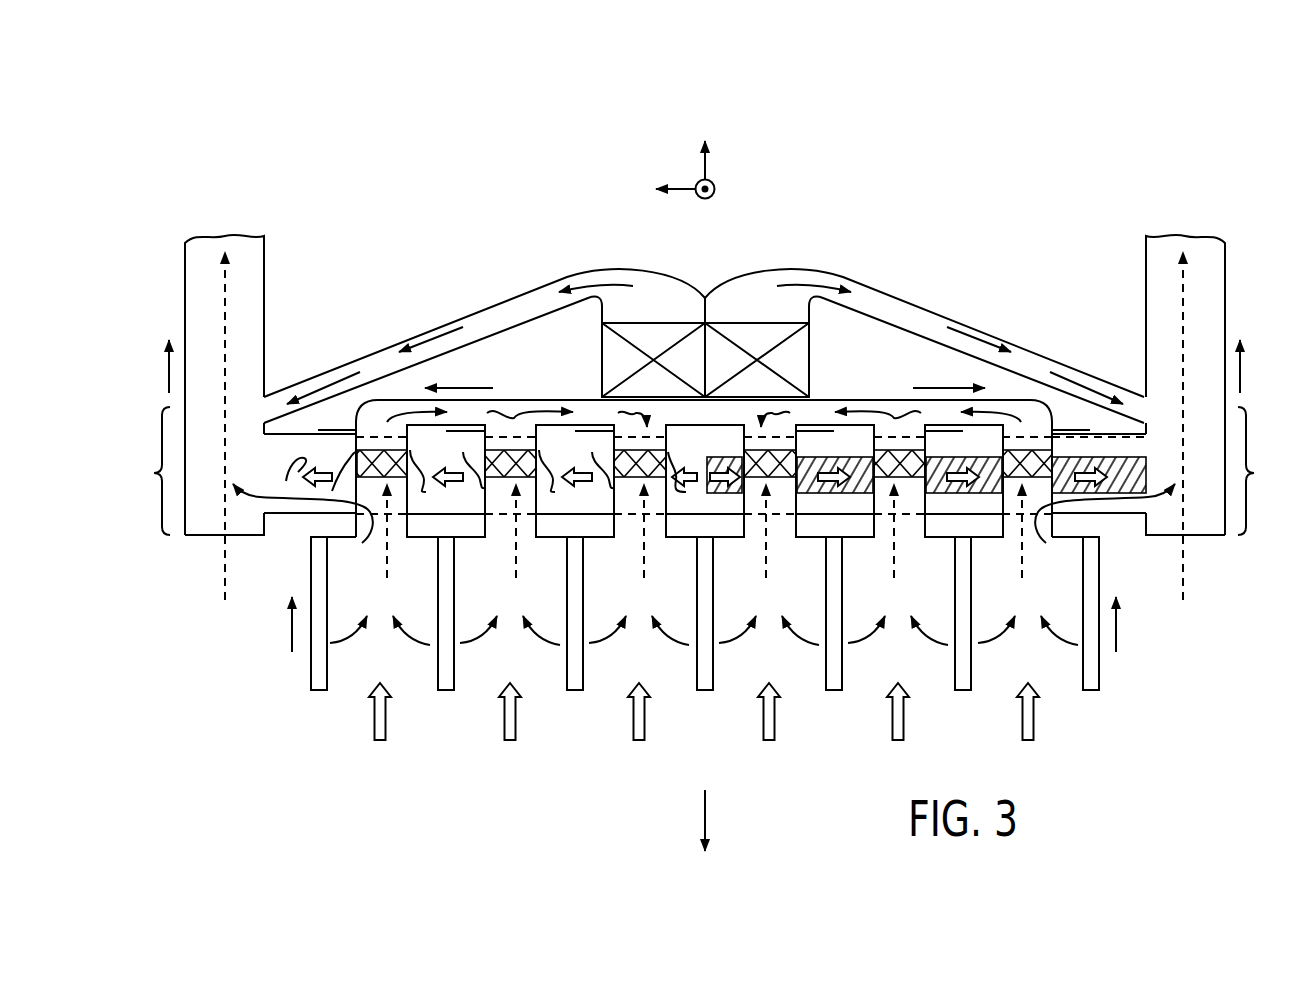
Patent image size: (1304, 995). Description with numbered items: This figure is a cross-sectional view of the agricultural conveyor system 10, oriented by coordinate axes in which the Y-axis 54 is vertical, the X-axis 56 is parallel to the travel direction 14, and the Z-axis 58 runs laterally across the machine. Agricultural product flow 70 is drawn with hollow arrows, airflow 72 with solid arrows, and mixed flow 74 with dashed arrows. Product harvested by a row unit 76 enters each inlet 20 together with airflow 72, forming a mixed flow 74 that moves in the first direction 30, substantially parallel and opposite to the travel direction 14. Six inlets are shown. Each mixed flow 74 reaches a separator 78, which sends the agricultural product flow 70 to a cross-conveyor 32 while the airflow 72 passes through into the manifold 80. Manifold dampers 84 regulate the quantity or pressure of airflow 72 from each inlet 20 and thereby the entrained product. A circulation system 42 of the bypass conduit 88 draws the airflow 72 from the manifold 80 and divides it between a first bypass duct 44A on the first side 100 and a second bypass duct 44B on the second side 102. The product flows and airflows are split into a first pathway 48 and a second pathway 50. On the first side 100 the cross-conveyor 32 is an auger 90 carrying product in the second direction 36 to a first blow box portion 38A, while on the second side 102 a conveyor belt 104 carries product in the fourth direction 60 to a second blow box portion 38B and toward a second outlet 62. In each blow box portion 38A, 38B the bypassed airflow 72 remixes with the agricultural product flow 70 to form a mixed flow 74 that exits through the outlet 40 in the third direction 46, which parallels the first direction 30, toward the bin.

The agricultural conveyor system 10 is at (1221, 132).
The travel direction 14 is at (704, 796).
The inlet 20 is at (1071, 692).
The first direction 30 is at (292, 626).
The cross-conveyor 32 is at (308, 515).
The second direction 36 is at (460, 388).
The first blow box portion 38A is at (139, 471).
The second blow box portion 38B is at (1267, 471).
The outlet 40 is at (184, 272).
The circulation system 42 is at (612, 355).
The first bypass duct 44A is at (492, 305).
The second bypass duct 44B is at (916, 305).
The third direction 46 is at (169, 372).
The first pathway 48 is at (243, 513).
The second pathway 50 is at (1160, 505).
The Y-axis 54 is at (712, 196).
The X-axis 56 is at (709, 165).
The Z-axis 58 is at (683, 183).
The fourth direction 60 is at (950, 388).
The second outlet 62 is at (1226, 272).
The agricultural product flow 70 is at (307, 483).
The airflow 72 is at (433, 335).
The mixed flow 74 is at (228, 343).
The row unit 76 is at (446, 690).
The separator 78 is at (407, 450).
The manifold 80 is at (513, 399).
The manifold damper 84 is at (340, 430).
The bypass conduit 88 is at (519, 214).
The auger 90 is at (293, 465).
The first side 100 is at (150, 647).
The second side 102 is at (1222, 632).
The conveyor belt 104 is at (1160, 467).